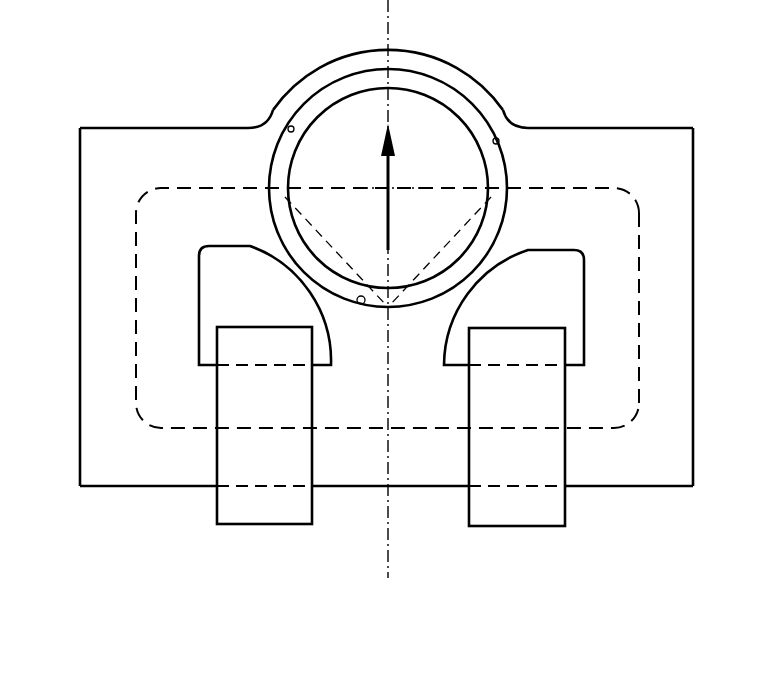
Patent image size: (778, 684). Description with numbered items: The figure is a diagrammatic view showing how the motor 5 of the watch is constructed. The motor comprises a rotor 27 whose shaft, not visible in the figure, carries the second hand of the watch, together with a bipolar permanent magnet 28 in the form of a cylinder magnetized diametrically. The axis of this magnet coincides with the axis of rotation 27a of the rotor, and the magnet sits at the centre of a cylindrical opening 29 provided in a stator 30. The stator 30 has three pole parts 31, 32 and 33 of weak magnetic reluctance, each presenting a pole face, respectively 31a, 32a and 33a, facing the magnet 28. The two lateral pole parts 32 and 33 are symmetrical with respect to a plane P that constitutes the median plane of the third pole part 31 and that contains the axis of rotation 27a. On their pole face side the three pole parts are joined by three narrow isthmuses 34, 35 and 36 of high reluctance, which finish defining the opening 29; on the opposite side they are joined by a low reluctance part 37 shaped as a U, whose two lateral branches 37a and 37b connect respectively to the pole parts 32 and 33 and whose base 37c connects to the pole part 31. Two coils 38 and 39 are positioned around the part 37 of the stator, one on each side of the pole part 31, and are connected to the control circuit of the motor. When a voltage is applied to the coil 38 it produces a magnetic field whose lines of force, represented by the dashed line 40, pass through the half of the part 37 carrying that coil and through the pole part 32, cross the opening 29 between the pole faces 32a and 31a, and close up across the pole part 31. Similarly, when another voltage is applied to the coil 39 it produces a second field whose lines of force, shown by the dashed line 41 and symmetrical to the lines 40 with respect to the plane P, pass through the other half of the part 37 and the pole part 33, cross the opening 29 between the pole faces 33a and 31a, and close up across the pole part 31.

The motor 5 is at (700, 314).
The rotor 27 is at (440, 80).
The axis of rotation 27a is at (392, 190).
The bipolar permanent magnet 28 is at (430, 118).
The cylindrical opening 29 is at (331, 104).
The stator 30 is at (96, 185).
The pole part 31 is at (430, 348).
The pole face 31a is at (360, 306).
The pole part 32 is at (143, 134).
The pole face 32a is at (288, 126).
The pole part 33 is at (652, 146).
The pole face 33a is at (498, 138).
The isthmus 34 is at (292, 276).
The isthmus 35 is at (476, 280).
The isthmus 36 is at (346, 58).
The low reluctance part 37 is at (97, 426).
The lateral branch 37a is at (97, 328).
The lateral branch 37b is at (670, 388).
The base 37c is at (360, 466).
The coil 38 is at (228, 505).
The coil 39 is at (550, 510).
The dashed line 40 is at (136, 262).
The dashed line 41 is at (640, 237).